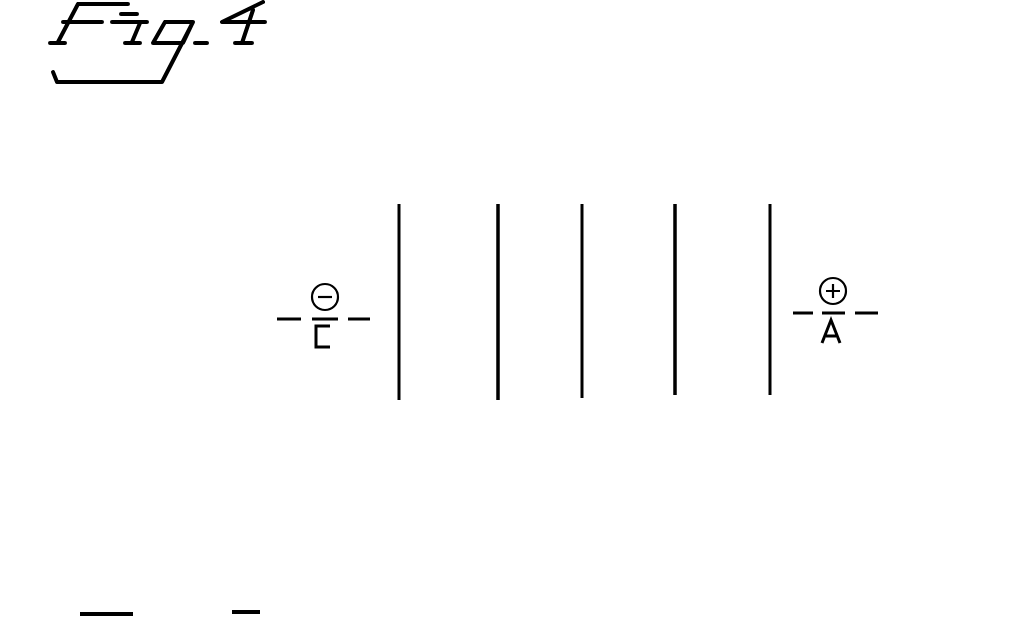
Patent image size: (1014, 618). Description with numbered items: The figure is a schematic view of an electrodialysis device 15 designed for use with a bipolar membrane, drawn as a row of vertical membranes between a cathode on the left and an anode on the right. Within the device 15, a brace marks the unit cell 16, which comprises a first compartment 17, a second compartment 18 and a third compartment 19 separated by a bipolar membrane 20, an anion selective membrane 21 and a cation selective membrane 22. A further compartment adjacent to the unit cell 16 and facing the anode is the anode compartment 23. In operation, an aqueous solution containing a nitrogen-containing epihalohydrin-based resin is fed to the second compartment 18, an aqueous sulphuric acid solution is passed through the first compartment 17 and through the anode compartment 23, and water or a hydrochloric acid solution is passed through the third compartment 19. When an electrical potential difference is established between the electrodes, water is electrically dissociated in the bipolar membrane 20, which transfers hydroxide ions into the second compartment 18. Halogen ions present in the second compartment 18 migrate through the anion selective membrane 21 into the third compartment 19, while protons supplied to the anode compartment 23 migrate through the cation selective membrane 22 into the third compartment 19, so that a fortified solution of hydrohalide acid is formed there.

The electrodialysis device 15 is at (913, 103).
The unit cell 16 is at (414, 162).
The first compartment 17 is at (423, 266).
The second compartment 18 is at (516, 266).
The third compartment 19 is at (604, 266).
The bipolar membrane 20 is at (493, 286).
The anion selective membrane 21 is at (577, 285).
The cation selective membrane 22 is at (675, 283).
The anode compartment 23 is at (702, 266).